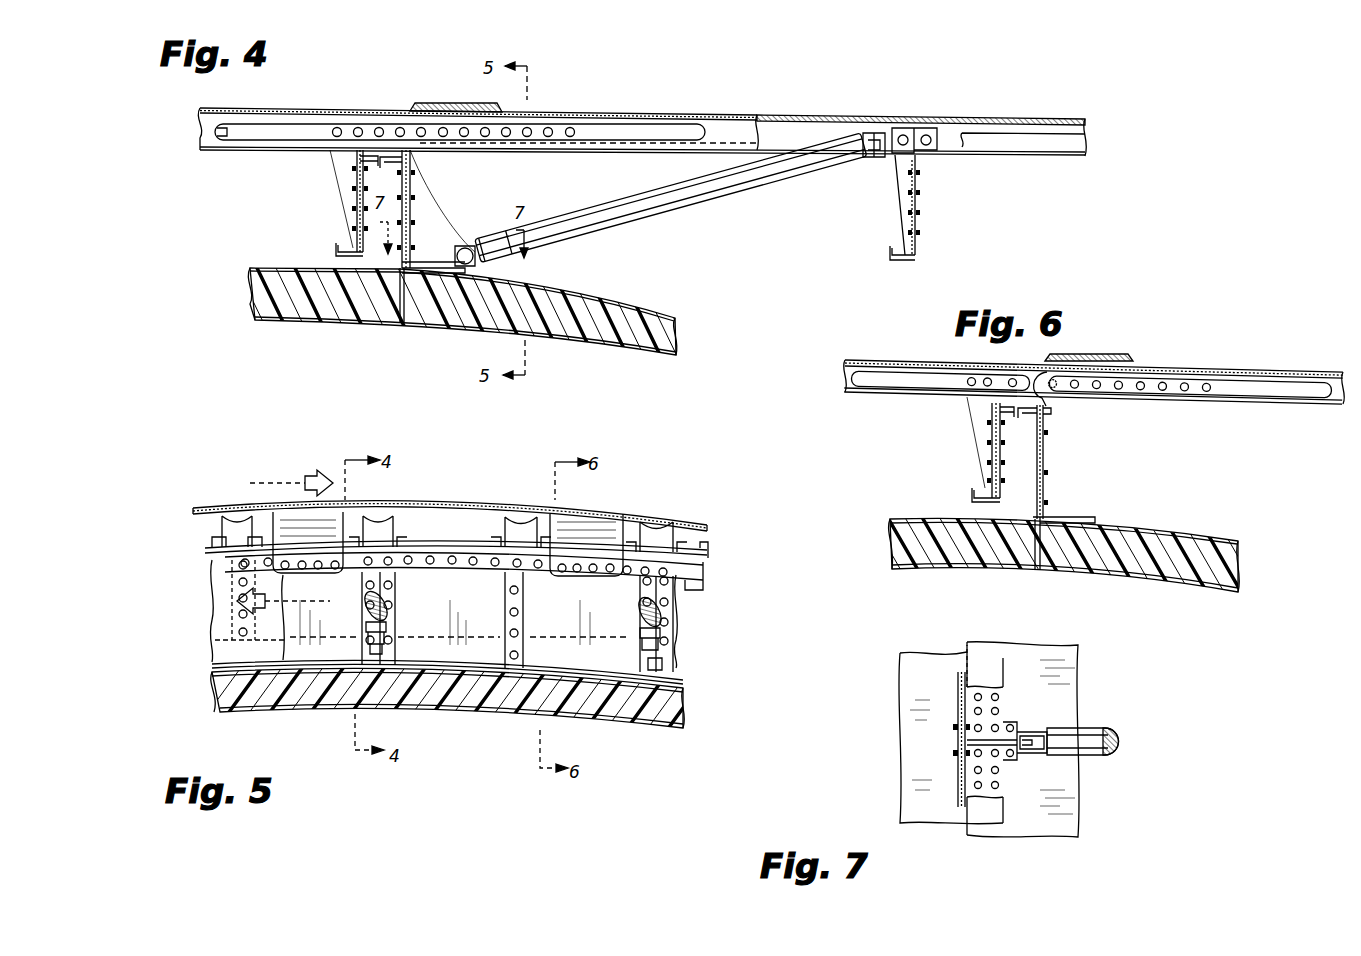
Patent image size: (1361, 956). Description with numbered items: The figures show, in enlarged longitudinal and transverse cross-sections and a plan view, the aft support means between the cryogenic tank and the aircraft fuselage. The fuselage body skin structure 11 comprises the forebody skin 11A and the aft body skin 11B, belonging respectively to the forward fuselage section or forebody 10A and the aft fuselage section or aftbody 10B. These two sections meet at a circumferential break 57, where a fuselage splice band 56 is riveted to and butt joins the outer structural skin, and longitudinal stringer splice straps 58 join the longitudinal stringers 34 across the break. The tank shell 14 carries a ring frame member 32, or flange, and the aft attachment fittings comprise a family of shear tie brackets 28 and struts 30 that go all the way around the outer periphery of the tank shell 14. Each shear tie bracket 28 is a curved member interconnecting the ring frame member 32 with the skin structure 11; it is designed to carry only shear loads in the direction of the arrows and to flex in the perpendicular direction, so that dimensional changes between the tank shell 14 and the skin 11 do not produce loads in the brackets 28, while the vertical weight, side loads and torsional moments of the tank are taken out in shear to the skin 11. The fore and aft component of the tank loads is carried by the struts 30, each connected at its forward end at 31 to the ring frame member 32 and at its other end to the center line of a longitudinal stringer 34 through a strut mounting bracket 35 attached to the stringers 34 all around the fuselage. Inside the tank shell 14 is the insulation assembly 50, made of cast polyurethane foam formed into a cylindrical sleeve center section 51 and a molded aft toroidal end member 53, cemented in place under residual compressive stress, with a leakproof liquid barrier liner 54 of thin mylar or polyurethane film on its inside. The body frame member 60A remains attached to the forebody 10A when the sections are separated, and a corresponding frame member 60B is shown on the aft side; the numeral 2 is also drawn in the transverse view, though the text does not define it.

In FIG. 4, the forebody 10A is at (642, 96).
In FIG. 4, the aftbody 10B is at (872, 94).
In FIG. 4, the forebody skin 11A is at (292, 104).
In FIG. 6, the forebody skin 11A is at (887, 360).
In FIG. 4, the aft body skin 11B is at (660, 111).
In FIG. 6, the aft body skin 11B is at (1296, 370).
In FIG. 5, the fuselage body skin structure 11 is at (208, 521).
In FIG. 5, the roof 2 is at (429, 506).
In FIG. 4, the tank shell 14 is at (626, 290).
In FIG. 6, the tank shell 14 is at (1172, 532).
In FIG. 4, the shear tie bracket 28 is at (405, 150).
In FIG. 5, the shear tie bracket 28 is at (624, 520).
In FIG. 6, the shear tie bracket 28 is at (1048, 396).
In FIG. 4, the strut 30 is at (720, 193).
In FIG. 5, the strut 30 is at (370, 606).
In FIG. 7, the strut 30 is at (1090, 728).
In FIG. 4, the strut forward end connection 31 is at (468, 248).
In FIG. 7, the strut forward end connection 31 is at (1020, 730).
In FIG. 4, the ring frame member 32 is at (412, 196).
In FIG. 5, the ring frame member 32 is at (455, 614).
In FIG. 6, the ring frame member 32 is at (1044, 472).
In FIG. 7, the ring frame member 32 is at (975, 672).
In FIG. 4, the longitudinal stringer 34 is at (207, 126).
In FIG. 5, the longitudinal stringer 34 is at (218, 540).
In FIG. 6, the longitudinal stringer 34 is at (843, 375).
In FIG. 4, the strut mounting bracket 35 is at (874, 158).
In FIG. 4, the insulation assembly 50 is at (465, 312).
In FIG. 5, the insulation assembly 50 is at (440, 701).
In FIG. 6, the insulation assembly 50 is at (1046, 552).
In FIG. 4, the cylindrical sleeve center section 51 is at (252, 284).
In FIG. 6, the cylindrical sleeve center section 51 is at (888, 527).
In FIG. 4, the aft toroidal end member 53 is at (675, 330).
In FIG. 6, the aft toroidal end member 53 is at (1240, 576).
In FIG. 4, the liquid barrier liner 54 is at (336, 322).
In FIG. 5, the liquid barrier liner 54 is at (335, 710).
In FIG. 6, the liquid barrier liner 54 is at (942, 570).
In FIG. 4, the fuselage splice band 56 is at (450, 104).
In FIG. 5, the fuselage splice band 56 is at (285, 506).
In FIG. 6, the fuselage splice band 56 is at (1096, 357).
In FIG. 4, the circumferential break 57 is at (453, 149).
In FIG. 6, the circumferential break 57 is at (1090, 401).
In FIG. 4, the longitudinal stringer splice strap 58 is at (318, 130).
In FIG. 6, the longitudinal stringer splice strap 58 is at (915, 386).
In FIG. 4, the body frame member 60A is at (356, 196).
In FIG. 6, the body frame member 60A is at (990, 442).
In FIG. 4, the support bracket 60B is at (918, 197).